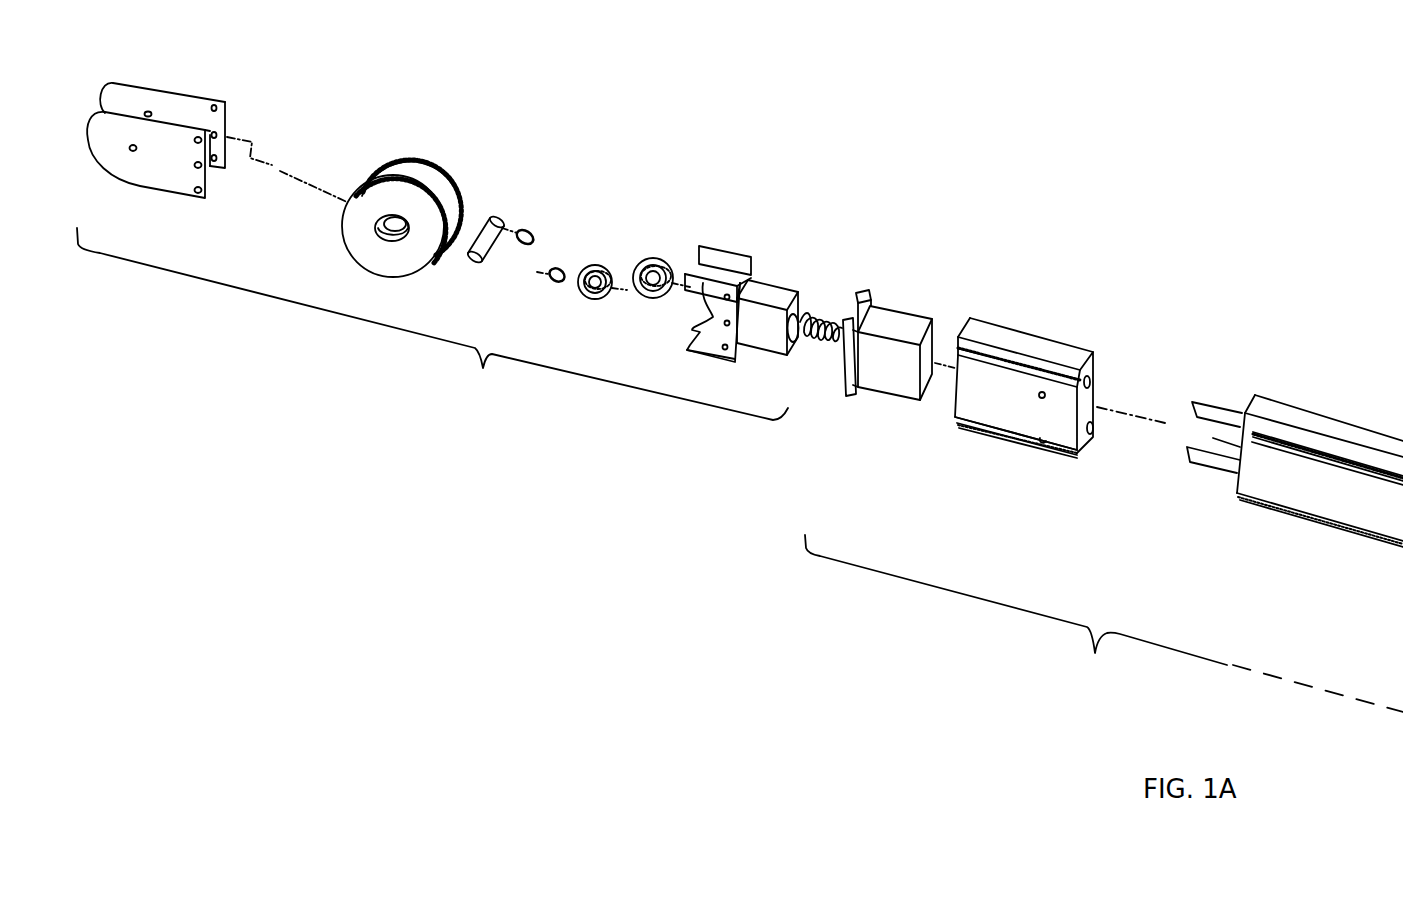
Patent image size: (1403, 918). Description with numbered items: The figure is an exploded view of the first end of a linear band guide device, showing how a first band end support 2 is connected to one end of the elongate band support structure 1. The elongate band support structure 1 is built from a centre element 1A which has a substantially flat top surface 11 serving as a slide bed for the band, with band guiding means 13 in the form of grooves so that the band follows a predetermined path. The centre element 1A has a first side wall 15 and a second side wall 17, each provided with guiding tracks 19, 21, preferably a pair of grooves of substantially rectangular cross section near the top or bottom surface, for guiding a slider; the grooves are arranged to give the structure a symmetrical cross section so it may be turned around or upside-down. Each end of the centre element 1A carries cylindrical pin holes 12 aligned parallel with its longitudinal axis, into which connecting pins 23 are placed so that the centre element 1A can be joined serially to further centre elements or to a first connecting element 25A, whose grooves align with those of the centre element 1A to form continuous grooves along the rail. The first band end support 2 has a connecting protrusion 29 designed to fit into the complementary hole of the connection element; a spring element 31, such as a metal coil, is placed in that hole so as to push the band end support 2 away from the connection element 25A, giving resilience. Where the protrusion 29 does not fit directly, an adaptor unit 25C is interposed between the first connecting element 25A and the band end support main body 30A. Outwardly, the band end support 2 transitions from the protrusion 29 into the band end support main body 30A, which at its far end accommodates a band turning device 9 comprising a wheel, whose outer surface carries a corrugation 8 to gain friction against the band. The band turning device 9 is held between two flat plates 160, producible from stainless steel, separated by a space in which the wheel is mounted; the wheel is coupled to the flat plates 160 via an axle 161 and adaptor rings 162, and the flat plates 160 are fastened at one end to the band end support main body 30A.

The flat plates 160 is at (192, 90).
The band turning device 9 is at (418, 163).
The corrugation 8 is at (452, 190).
The axle 161 is at (495, 218).
The adaptor rings 162 is at (590, 263).
The band end support main body 30A is at (730, 247).
The connecting protrusion 29 is at (768, 353).
The spring element 31 is at (818, 307).
The adaptor unit 25C is at (905, 308).
The band guiding means 13 is at (1027, 350).
The guiding track 19 is at (1103, 427).
The cylindrical pin holes 12 is at (1090, 380).
The guiding track 21 is at (1077, 397).
The first connecting element 25A is at (887, 397).
The connecting pins 23 is at (1218, 408).
The second side wall 17 is at (1313, 403).
The flat top surface 11 is at (1360, 433).
The first side wall 15 is at (1285, 475).
The centre element 1A is at (1318, 523).
The first band end support 2 is at (432, 324).
The elongate band support structure 1 is at (1104, 623).